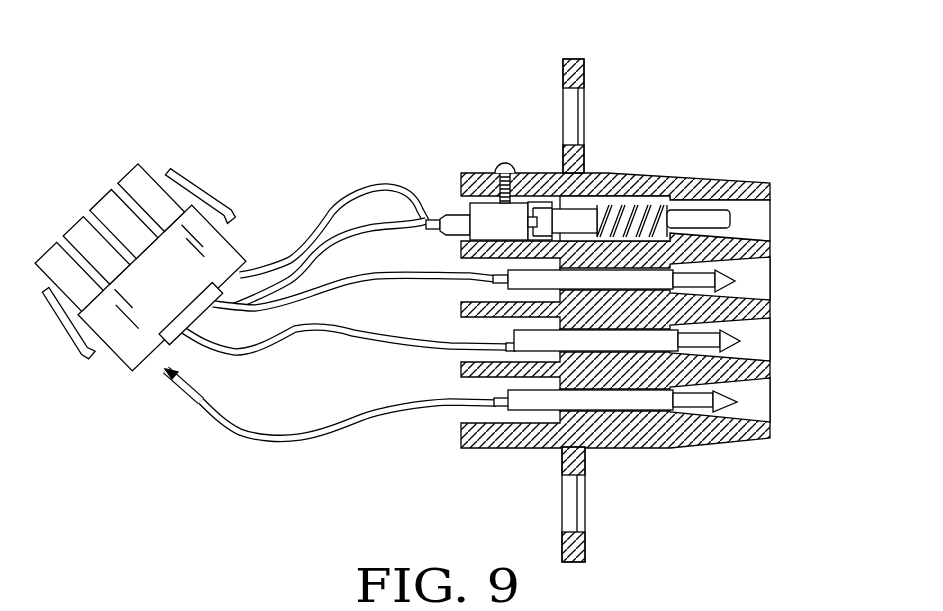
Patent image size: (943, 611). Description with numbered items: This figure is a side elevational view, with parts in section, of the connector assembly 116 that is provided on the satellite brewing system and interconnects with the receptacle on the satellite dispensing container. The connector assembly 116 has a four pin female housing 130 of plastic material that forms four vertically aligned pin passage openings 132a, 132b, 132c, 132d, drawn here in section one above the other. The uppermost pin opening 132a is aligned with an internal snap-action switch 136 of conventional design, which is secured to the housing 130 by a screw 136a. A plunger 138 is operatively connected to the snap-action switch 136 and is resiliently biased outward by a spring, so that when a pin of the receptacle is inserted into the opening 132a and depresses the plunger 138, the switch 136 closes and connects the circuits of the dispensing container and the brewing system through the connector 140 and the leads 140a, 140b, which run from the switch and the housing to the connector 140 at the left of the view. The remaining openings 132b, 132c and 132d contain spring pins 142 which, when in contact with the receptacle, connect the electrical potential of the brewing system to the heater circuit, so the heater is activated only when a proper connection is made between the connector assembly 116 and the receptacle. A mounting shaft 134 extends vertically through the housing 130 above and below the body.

The connector assembly 116 is at (472, 134).
The four pin female housing 130 is at (628, 177).
The pin opening 132a is at (758, 216).
The pin passage opening 132b is at (760, 286).
The pin passage opening 132c is at (755, 347).
The pin passage opening 132d is at (755, 407).
The mounting shaft 134 is at (572, 58).
The snap-action switch 136 is at (513, 213).
The screw 136a is at (496, 170).
The plunger 138 is at (653, 86).
The connector 140 is at (167, 243).
The lead 140a is at (332, 241).
The leads 140b is at (312, 428).
The contact pins 142 is at (748, 272).